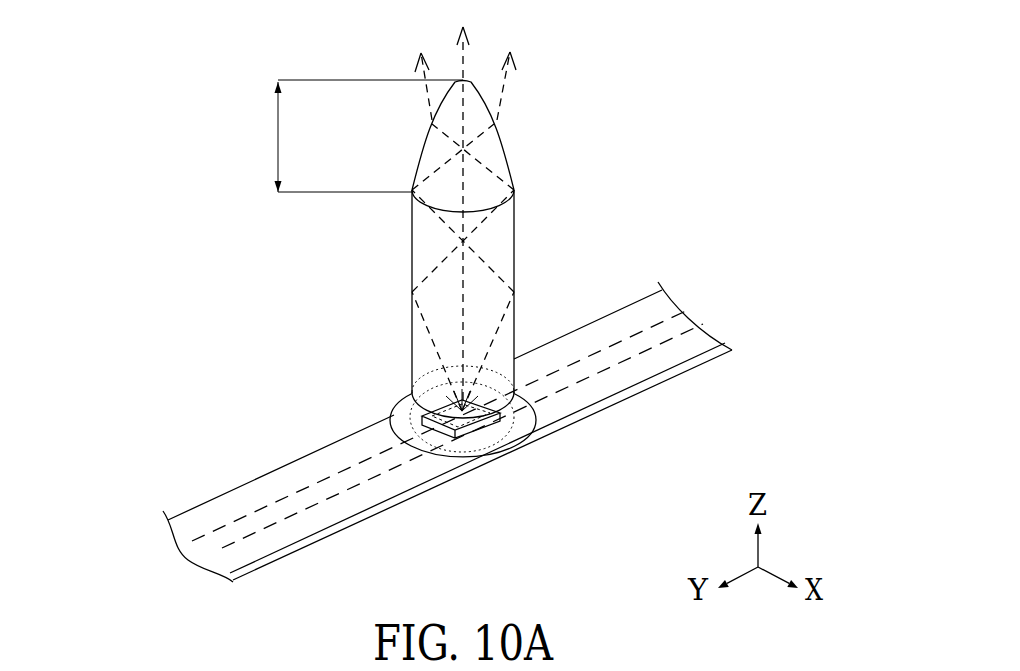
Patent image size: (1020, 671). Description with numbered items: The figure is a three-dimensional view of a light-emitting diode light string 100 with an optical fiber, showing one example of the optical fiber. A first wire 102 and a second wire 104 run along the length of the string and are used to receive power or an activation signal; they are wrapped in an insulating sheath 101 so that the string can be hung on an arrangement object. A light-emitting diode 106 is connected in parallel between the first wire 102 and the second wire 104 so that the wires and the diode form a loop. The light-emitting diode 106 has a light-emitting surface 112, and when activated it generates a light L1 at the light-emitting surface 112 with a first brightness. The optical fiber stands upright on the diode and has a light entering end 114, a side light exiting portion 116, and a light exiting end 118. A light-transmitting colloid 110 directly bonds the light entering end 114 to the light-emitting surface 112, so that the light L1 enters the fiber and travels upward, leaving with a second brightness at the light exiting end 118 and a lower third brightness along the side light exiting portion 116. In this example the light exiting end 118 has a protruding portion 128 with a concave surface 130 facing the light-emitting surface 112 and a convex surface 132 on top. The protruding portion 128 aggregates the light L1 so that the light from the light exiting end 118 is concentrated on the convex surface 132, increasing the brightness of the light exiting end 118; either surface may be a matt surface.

The light-emitting diode light string with an optical fiber 100 is at (56, 75).
The insulating sheath 101 is at (683, 362).
The first wire 102 is at (253, 512).
The second wire 104 is at (276, 523).
The light-emitting diode 106 is at (455, 439).
The light-transmitting colloid 110 is at (403, 423).
The light-emitting surface 112 is at (431, 403).
The light entering end 114 is at (493, 463).
The side light exiting portion 116 is at (418, 245).
The light exiting end 118 is at (504, 139).
The protruding portion 128 is at (693, 190).
The concave surface 130 is at (506, 184).
The convex surface 132 is at (519, 142).
The light L1 is at (462, 200).